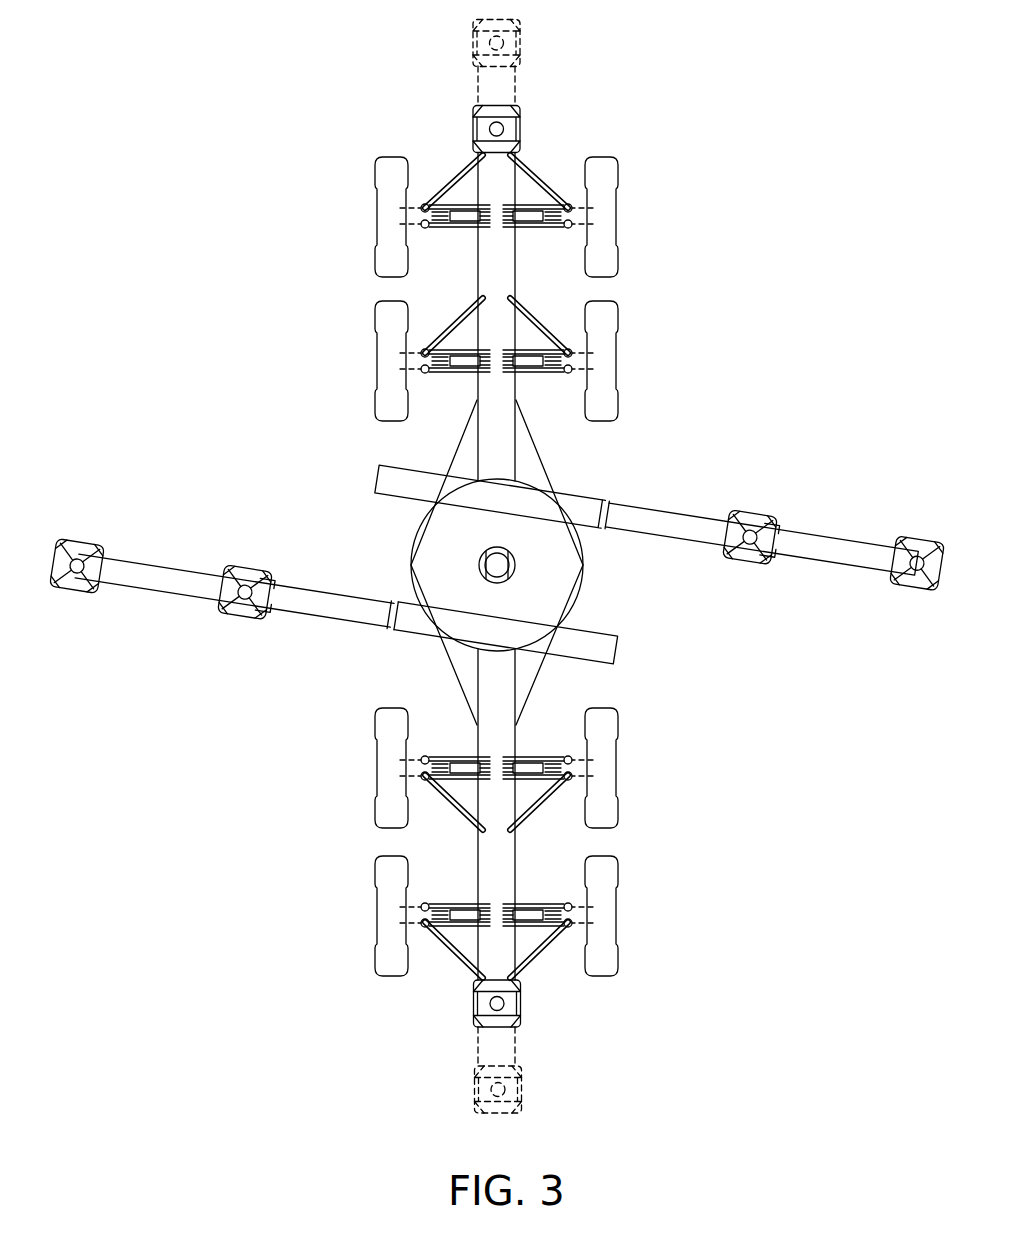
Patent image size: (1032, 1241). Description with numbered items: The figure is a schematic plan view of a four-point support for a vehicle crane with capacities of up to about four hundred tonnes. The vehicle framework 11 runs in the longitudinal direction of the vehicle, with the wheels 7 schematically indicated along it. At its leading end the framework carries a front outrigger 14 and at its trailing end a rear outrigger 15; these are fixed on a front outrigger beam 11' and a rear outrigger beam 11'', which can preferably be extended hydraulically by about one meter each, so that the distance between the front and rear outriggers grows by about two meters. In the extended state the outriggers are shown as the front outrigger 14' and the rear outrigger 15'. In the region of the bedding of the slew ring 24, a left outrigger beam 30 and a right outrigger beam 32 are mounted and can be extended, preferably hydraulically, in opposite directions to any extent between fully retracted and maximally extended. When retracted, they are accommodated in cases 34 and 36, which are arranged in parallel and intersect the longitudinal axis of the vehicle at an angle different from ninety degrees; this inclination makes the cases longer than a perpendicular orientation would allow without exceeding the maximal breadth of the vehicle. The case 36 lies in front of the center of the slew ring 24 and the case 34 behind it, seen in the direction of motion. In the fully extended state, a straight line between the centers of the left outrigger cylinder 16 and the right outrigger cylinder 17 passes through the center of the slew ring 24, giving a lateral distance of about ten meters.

The wheels 7 is at (605, 238).
The vehicle framework 11 is at (499, 566).
The front outrigger beam 11' is at (533, 79).
The rear outrigger beam 11'' is at (535, 1044).
The front outrigger 14 is at (469, 121).
The front outrigger in extended state 14' is at (529, 33).
The rear outrigger 15 is at (474, 1012).
The rear outrigger in extended state 15' is at (531, 1086).
The left outrigger cylinder 16 is at (80, 548).
The right outrigger cylinder 17 is at (918, 590).
The slew ring 24 is at (425, 538).
The left outrigger beam 30 is at (318, 612).
The right outrigger beam 32 is at (655, 507).
The accommodation case 34 is at (612, 650).
The accommodation case 36 is at (378, 480).